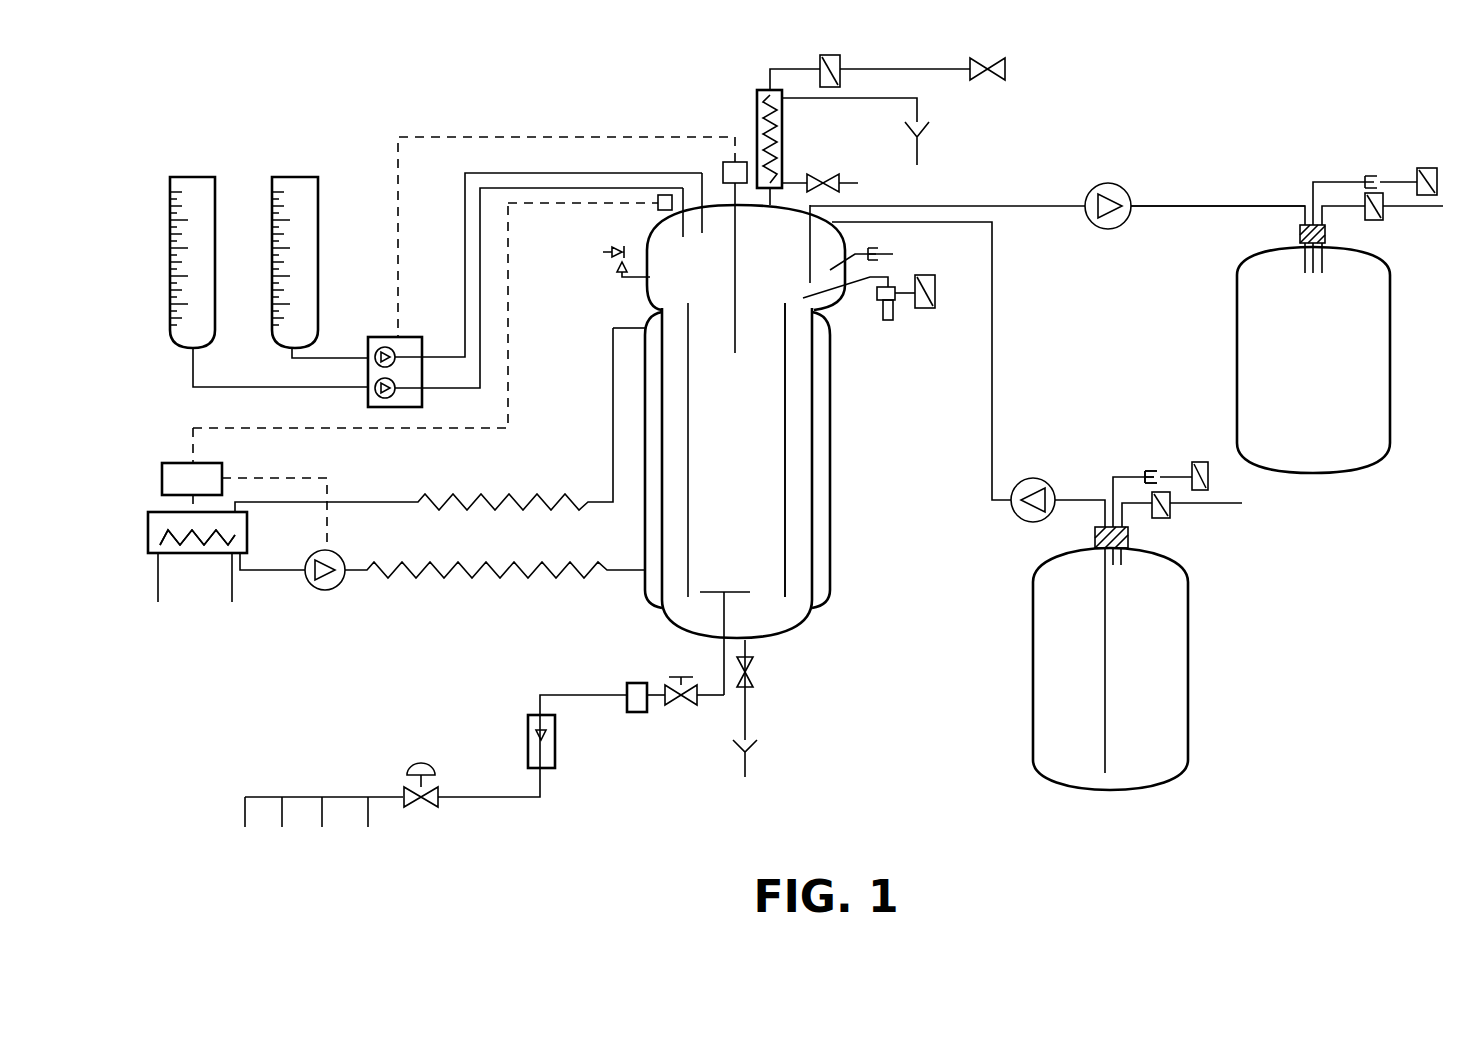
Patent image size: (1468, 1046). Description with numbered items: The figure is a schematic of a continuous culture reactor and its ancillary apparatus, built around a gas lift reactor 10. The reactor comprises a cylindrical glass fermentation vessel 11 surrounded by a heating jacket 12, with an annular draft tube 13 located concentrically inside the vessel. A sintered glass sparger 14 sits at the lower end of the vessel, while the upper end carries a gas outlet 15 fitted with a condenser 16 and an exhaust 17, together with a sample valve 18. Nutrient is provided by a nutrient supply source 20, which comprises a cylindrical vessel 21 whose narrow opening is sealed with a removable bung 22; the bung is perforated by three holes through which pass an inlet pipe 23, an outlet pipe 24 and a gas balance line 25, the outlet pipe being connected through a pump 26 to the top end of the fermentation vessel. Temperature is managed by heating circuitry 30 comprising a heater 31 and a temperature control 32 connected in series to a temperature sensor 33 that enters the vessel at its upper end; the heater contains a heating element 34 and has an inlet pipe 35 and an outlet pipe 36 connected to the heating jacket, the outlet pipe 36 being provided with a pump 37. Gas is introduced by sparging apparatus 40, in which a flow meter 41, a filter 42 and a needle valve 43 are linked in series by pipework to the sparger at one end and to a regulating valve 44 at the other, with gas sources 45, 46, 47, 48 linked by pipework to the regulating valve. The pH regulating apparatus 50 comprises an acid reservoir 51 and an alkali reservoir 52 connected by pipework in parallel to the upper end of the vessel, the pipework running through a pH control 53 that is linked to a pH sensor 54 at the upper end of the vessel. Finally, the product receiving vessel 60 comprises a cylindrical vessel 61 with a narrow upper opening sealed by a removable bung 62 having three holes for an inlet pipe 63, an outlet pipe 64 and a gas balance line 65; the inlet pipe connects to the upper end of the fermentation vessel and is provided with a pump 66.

The gas lift reactor 10 is at (828, 482).
The fermentation vessel 11 is at (808, 615).
The heating jacket 12 is at (830, 588).
The annular draft tube 13 is at (782, 568).
The sintered glass sparger 14 is at (743, 593).
The gas outlet 15 is at (786, 68).
The condenser 16 is at (757, 118).
The exhaust 17 is at (990, 80).
The sample valve 18 is at (893, 320).
The nutrient supply source 20 is at (1195, 707).
The cylindrical vessel 21 is at (1188, 753).
The removable bung 22 is at (1130, 535).
The inlet pipe 23 is at (1242, 503).
The outlet pipe 24 is at (1085, 500).
The gas balance line 25 is at (1152, 472).
The pump 26 is at (1037, 478).
The heating circuitry 30 is at (258, 586).
The heater 31 is at (247, 540).
The temperature control 32 is at (222, 468).
The temperature sensor 33 is at (658, 205).
The heating element 34 is at (183, 540).
The inlet pipe 35 is at (353, 500).
The outlet pipe 36 is at (360, 572).
The pump 37 is at (325, 590).
The sparging apparatus 40 is at (657, 808).
The flow meter 41 is at (556, 737).
The filter 42 is at (628, 684).
The needle valve 43 is at (668, 705).
The regulating valve 44 is at (428, 767).
The gas source 45 is at (250, 803).
The gas source 46 is at (288, 803).
The gas source 47 is at (327, 803).
The gas source 48 is at (374, 803).
The pH regulating apparatus 50 is at (350, 165).
The acid reservoir 51 is at (215, 287).
The alkali reservoir 52 is at (318, 287).
The pump unit 53 is at (383, 337).
The stirrer motor 54 is at (723, 168).
The product receiving vessel 60 is at (1403, 160).
The cylindrical vessel 61 is at (1237, 340).
The removable bung 62 is at (1300, 225).
The inlet pipe 63 is at (1205, 208).
The outlet pipe 64 is at (1393, 207).
The gas balance line 65 is at (1313, 190).
The pump 66 is at (1115, 187).